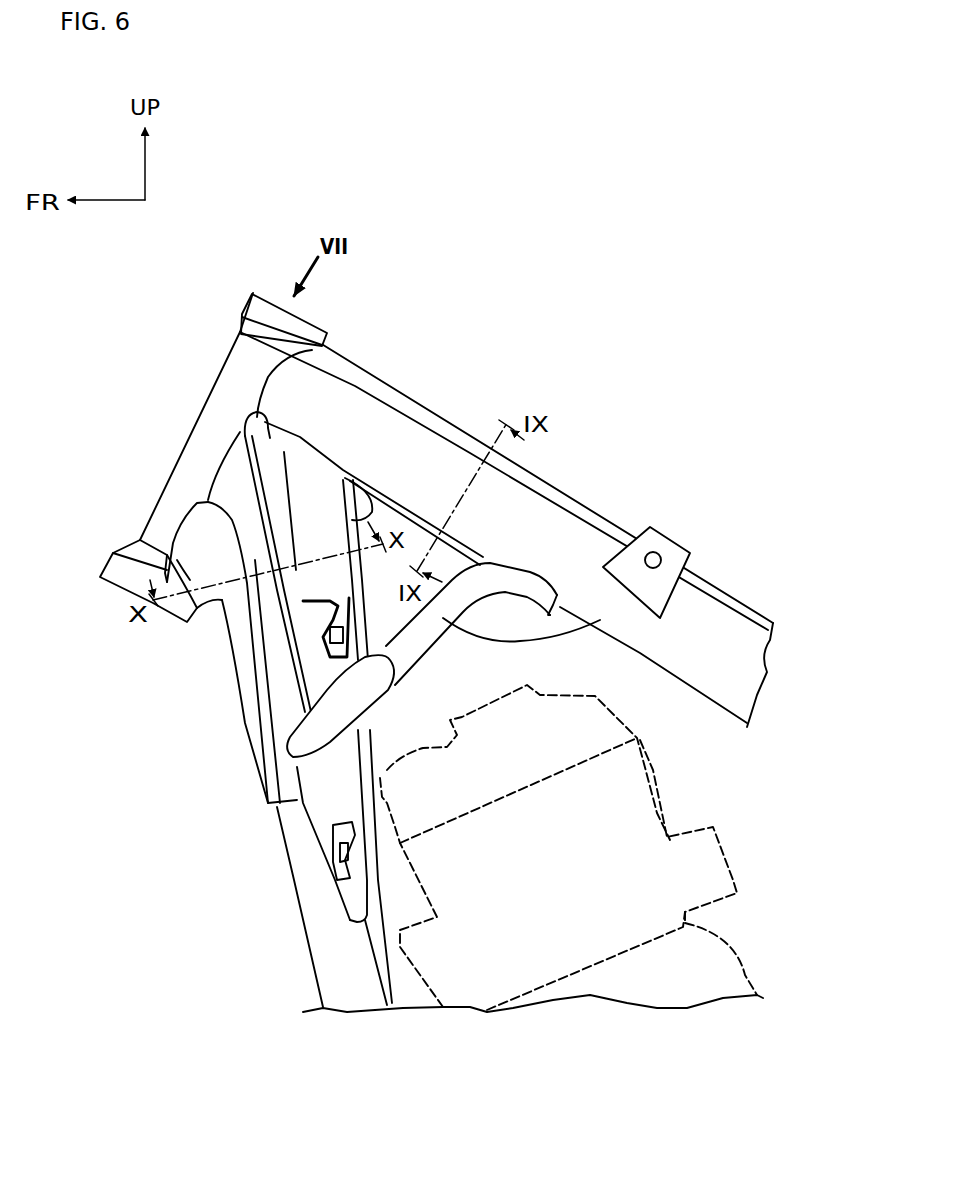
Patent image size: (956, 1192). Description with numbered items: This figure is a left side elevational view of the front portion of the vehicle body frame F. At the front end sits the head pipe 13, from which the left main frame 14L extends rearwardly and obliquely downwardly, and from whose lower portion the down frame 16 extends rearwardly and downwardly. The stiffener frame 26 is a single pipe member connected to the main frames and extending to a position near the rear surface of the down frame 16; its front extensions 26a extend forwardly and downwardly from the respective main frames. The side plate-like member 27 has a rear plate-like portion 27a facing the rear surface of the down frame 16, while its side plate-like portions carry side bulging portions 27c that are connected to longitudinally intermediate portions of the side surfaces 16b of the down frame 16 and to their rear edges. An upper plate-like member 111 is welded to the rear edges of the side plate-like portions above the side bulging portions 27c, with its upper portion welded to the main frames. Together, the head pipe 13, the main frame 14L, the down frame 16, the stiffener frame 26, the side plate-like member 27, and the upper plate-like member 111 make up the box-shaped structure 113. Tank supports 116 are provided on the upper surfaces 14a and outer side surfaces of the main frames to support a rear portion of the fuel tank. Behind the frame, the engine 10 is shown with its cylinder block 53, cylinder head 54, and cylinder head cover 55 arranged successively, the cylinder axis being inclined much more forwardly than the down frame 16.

The engine 10 is at (660, 805).
The head pipe 13 is at (202, 442).
The upper surfaces of the main frames 14a is at (441, 445).
The left main frame 14L is at (547, 507).
The down frame 16 is at (283, 855).
The side surfaces of the down frame 16b is at (313, 906).
The stiffener frame 26 is at (533, 573).
The front extensions 26a is at (567, 637).
The side plate-like member 27 is at (312, 674).
The rear plate-like portion 27a is at (298, 544).
The side bulging portions 27c is at (313, 740).
The cylinder block 53 is at (727, 942).
The cylinder head 54 is at (650, 765).
The cylinder head cover 55 is at (613, 705).
The upper plate-like member 111 is at (366, 545).
The box-shaped structure 113 is at (284, 450).
The tank supports 116 is at (663, 527).
The vehicle body frame F is at (213, 370).